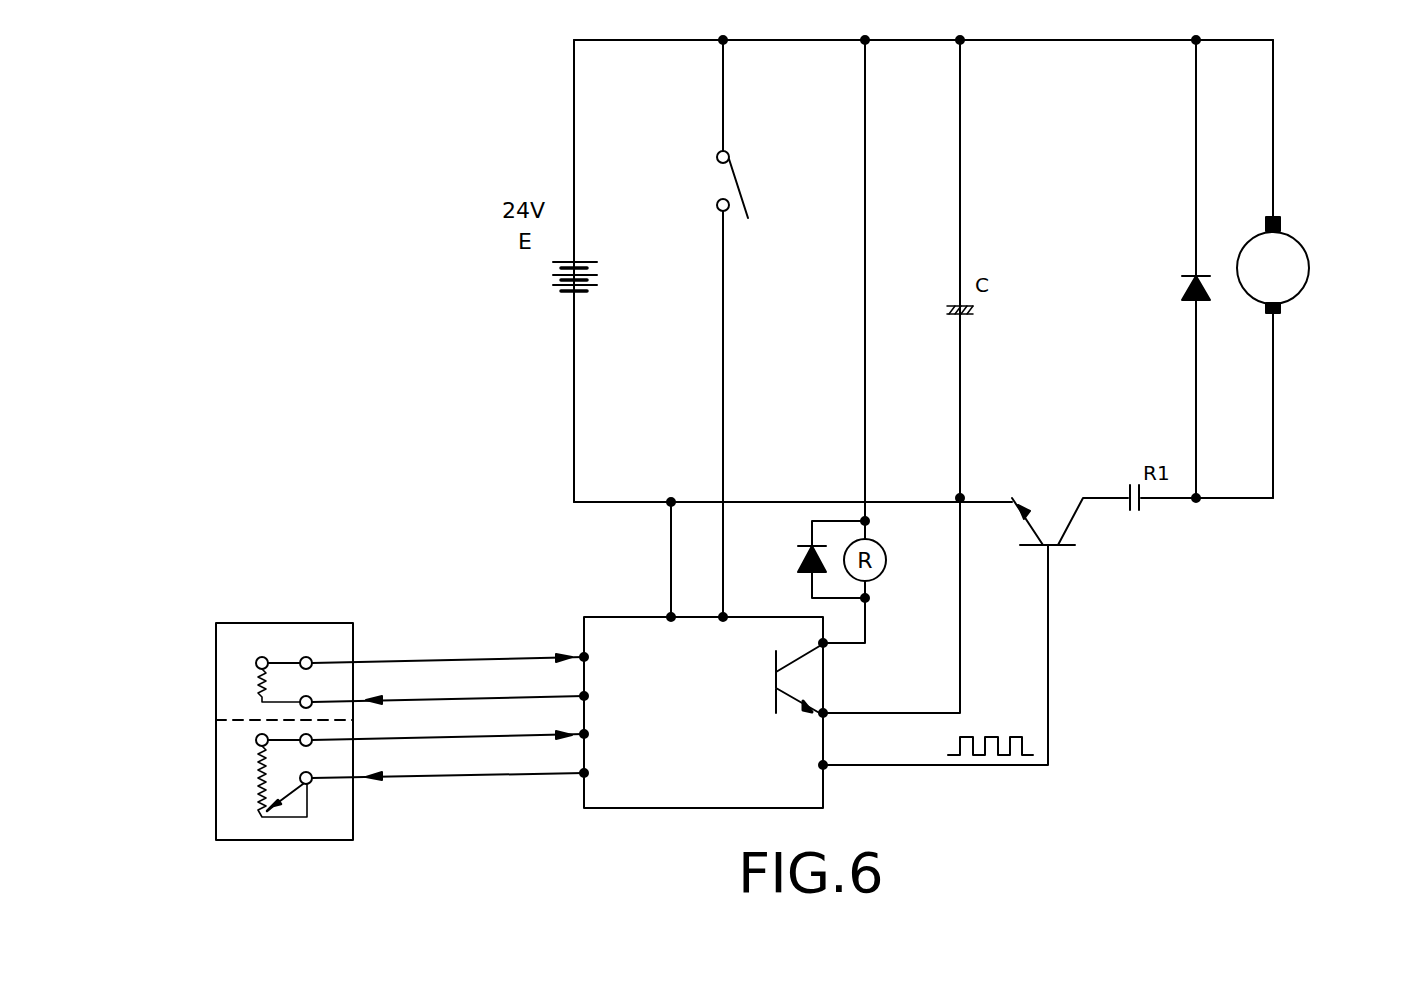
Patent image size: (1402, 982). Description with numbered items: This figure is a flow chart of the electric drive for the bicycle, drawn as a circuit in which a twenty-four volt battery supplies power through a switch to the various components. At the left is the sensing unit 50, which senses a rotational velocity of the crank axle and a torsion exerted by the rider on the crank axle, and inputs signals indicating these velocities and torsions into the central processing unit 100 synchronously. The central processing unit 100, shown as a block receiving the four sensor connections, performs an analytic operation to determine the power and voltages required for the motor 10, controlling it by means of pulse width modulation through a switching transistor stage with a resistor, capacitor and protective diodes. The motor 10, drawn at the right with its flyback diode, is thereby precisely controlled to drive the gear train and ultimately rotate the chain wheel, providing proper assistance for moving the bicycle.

The motor 10 is at (1308, 276).
The sensing unit 50 is at (213, 602).
The central processing unit 100 is at (805, 790).